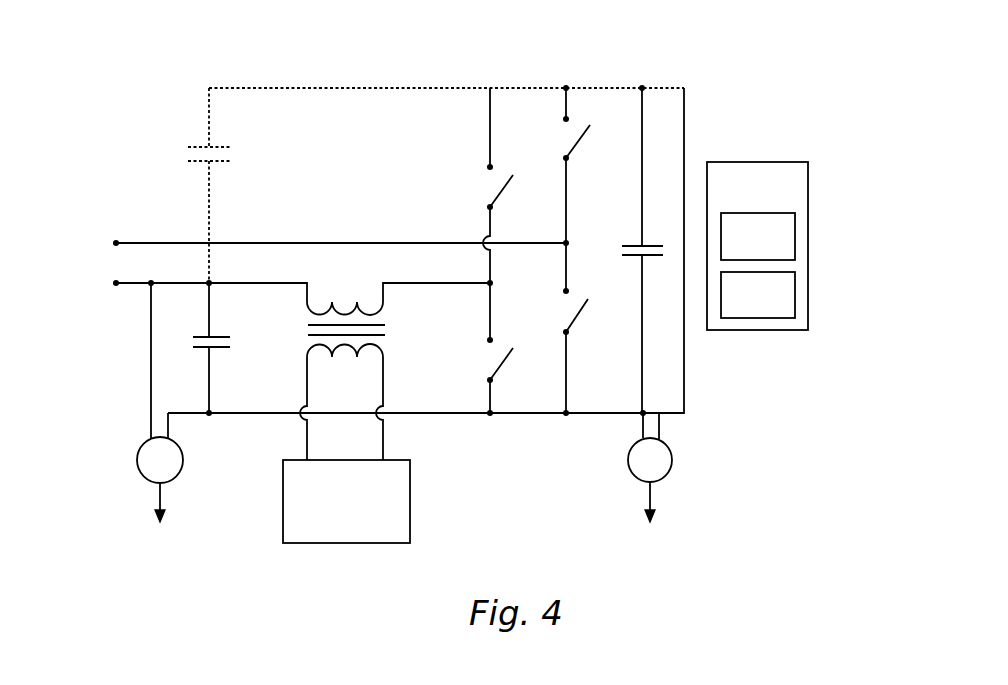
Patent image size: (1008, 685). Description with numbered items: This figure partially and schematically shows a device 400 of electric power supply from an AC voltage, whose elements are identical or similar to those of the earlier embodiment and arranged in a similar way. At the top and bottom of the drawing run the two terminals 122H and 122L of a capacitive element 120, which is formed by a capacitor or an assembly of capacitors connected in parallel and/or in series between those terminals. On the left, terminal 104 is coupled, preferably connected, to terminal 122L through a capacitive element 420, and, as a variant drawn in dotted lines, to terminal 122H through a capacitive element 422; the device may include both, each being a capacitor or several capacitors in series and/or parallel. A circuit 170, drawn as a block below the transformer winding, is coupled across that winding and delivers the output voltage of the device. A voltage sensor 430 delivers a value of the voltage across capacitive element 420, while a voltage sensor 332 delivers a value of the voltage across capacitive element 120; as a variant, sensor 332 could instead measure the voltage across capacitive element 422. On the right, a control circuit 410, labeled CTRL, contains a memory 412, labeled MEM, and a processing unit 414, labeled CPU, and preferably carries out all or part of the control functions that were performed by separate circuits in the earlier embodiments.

The device of electric power supply 400 is at (218, 52).
The capacitive element 422 is at (190, 146).
The terminal 122H is at (531, 86).
The terminal 122L is at (530, 416).
The terminal 104 is at (112, 287).
The capacitive element 420 is at (222, 338).
The capacitive element 120 is at (634, 246).
The circuit 170 is at (364, 512).
The voltage sensor 430 is at (140, 448).
The voltage sensor 332 is at (668, 454).
The circuit 410 is at (788, 160).
The processing unit 414 is at (797, 246).
The memory 412 is at (797, 304).